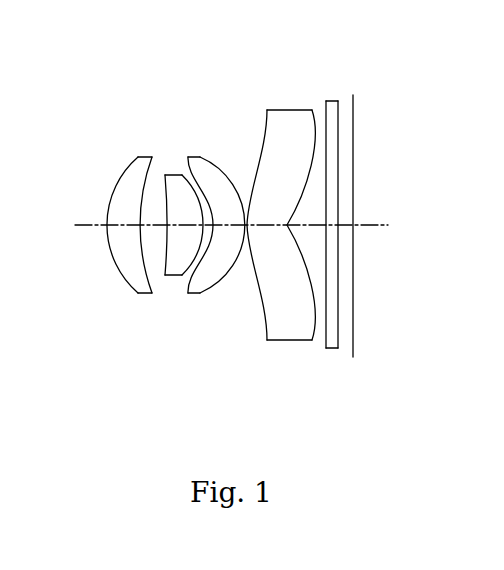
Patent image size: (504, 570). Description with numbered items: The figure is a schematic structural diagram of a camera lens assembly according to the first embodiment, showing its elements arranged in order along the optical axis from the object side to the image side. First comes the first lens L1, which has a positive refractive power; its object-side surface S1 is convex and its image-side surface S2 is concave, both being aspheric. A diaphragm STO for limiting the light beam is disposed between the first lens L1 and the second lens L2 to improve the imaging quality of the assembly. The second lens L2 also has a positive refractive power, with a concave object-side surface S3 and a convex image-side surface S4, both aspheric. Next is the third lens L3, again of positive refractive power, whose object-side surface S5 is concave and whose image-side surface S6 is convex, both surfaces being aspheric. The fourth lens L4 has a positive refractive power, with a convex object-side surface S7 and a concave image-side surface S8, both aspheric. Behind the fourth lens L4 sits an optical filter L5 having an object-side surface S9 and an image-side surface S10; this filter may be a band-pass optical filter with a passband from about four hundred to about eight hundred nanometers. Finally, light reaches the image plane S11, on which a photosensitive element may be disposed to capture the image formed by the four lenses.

The first lens L1 is at (140, 157).
The second lens L2 is at (168, 175).
The third lens L3 is at (192, 155).
The fourth lens L4 is at (278, 110).
The optical filter L5 is at (332, 101).
The diaphragm STO is at (151, 197).
The object-side surface of the first lens S1 is at (107, 228).
The image-side surface of the first lens S2 is at (140, 228).
The object-side surface of the second lens S3 is at (167, 228).
The image-side surface of the second lens S4 is at (203, 228).
The object-side surface of the third lens S5 is at (213, 228).
The image-side surface of the third lens S6 is at (246, 228).
The object-side surface of the fourth lens S7 is at (248, 228).
The image-side surface of the fourth lens S8 is at (287, 228).
The object-side surface of the optical filter S9 is at (327, 228).
The image-side surface of the optical filter S10 is at (338, 228).
The image plane S11 is at (353, 228).